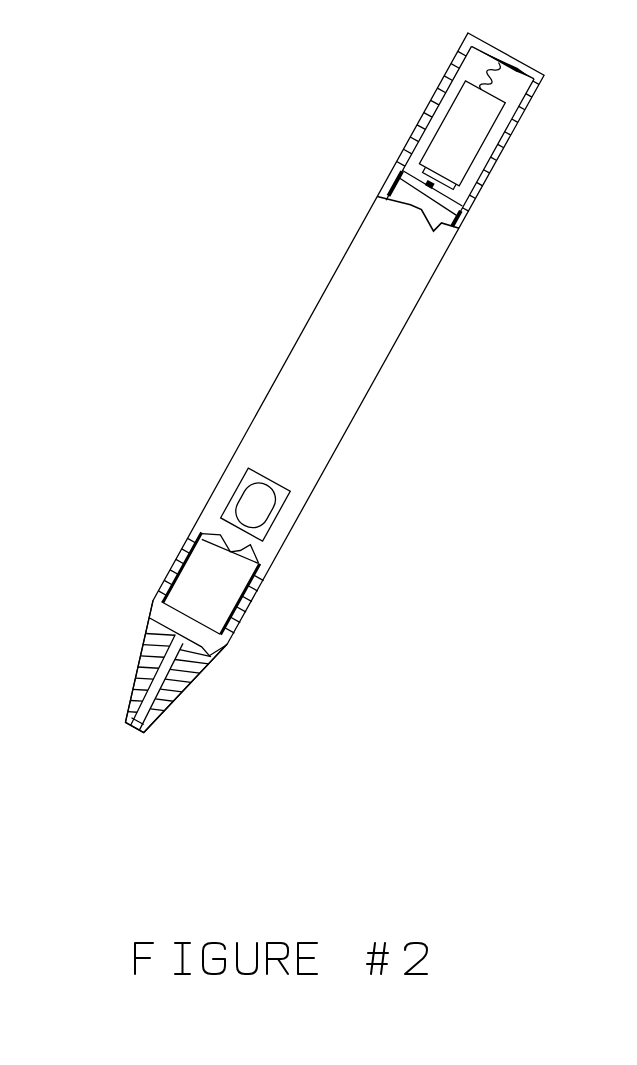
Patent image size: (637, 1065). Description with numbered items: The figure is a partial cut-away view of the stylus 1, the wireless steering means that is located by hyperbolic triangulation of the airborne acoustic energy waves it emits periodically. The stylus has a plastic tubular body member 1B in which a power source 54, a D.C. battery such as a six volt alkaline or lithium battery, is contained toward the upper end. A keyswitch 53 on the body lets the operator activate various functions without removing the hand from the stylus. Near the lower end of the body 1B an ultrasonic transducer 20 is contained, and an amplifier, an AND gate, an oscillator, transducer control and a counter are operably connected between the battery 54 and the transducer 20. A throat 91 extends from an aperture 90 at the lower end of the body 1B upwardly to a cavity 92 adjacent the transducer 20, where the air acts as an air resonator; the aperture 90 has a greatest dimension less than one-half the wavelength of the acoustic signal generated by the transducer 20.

The stylus 1 is at (288, 352).
The power source 54 is at (460, 130).
The keyswitch 53 is at (254, 504).
The plastic tubular body member 1B is at (182, 549).
The ultrasonic transducer 20 is at (204, 599).
The cavity 92 is at (204, 647).
The throat 91 is at (137, 673).
The aperture 90 is at (88, 734).